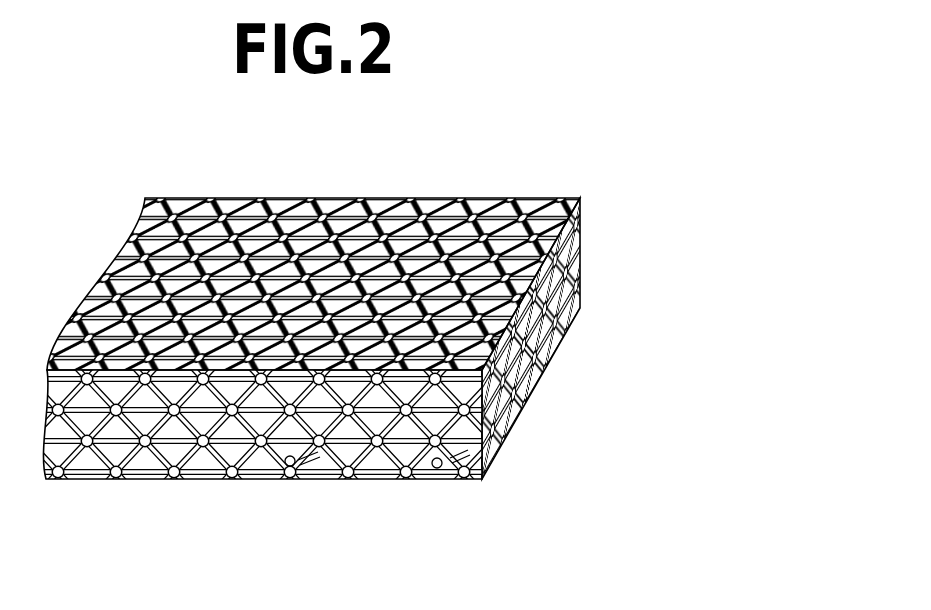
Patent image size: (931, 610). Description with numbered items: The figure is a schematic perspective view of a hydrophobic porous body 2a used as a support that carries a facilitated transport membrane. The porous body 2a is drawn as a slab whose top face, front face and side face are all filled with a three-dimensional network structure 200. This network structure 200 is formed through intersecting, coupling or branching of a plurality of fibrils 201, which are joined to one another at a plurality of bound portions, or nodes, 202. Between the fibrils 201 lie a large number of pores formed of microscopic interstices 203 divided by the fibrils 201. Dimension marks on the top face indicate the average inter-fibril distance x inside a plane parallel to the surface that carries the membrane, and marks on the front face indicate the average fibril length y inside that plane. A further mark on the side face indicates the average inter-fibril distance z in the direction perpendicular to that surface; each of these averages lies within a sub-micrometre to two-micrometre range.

The hydrophobic porous body 2a is at (541, 152).
The three-dimensional network structure 200 is at (391, 520).
The fibril 201 is at (290, 466).
The bound portion (node) 202 is at (306, 463).
The microscopic interstice 203 is at (115, 462).
The average inter-fibril distance inside the plane x is at (318, 265).
The average fibril length y is at (213, 468).
The average inter-fibril distance perpendicular to the surface z is at (580, 265).